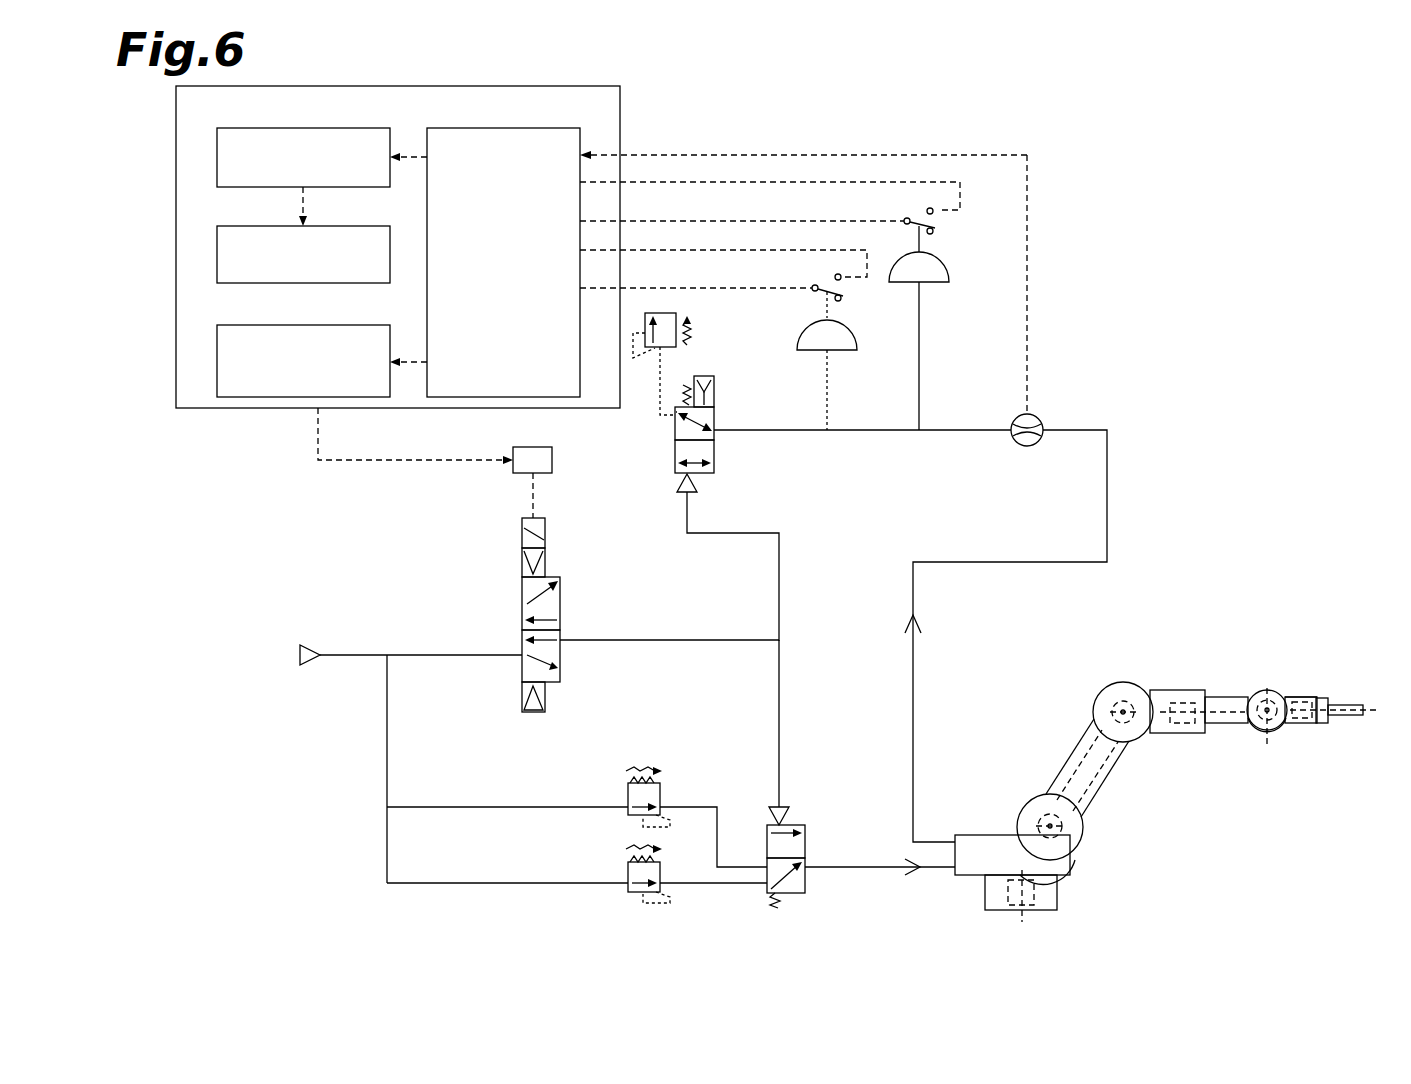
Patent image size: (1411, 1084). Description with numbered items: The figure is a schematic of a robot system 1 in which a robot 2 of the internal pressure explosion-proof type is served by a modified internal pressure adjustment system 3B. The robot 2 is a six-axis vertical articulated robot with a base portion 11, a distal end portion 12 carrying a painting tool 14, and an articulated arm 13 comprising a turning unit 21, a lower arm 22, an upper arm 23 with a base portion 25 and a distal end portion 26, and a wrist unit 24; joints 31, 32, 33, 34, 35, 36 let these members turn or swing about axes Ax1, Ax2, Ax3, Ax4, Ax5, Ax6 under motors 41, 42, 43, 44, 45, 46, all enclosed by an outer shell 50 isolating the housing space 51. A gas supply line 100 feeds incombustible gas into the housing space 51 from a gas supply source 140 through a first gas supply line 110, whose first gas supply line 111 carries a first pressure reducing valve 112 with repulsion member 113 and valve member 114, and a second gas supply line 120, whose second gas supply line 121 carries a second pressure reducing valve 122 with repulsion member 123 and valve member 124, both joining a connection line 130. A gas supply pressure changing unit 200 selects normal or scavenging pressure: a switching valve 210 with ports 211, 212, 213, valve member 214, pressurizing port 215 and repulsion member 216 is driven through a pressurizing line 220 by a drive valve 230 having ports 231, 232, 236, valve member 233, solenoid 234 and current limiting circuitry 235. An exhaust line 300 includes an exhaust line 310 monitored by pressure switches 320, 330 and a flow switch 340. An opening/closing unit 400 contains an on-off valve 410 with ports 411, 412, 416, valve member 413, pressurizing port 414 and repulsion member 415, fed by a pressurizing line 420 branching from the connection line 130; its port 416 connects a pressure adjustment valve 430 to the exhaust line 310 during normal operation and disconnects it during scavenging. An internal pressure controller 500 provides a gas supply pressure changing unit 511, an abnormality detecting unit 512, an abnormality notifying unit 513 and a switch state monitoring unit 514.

The robot system 1 is at (1253, 210).
The robot 2 is at (998, 658).
The internal pressure adjustment system 3B is at (1097, 290).
The base portion 11 is at (985, 893).
The distal end portion 12 is at (1322, 698).
The articulated arm 13 is at (1073, 735).
The painting tool 14 is at (1350, 715).
The turning unit 21 is at (958, 835).
The lower arm 22 is at (1068, 780).
The upper arm 23 is at (1157, 600).
The wrist unit 24 is at (1300, 723).
The base portion 25 is at (1185, 690).
The distal end portion 26 is at (1210, 697).
The joint 31 is at (1065, 875).
The joint 32 is at (1083, 835).
The joint 33 is at (1100, 688).
The joint 34 is at (1220, 723).
The joint 35 is at (1270, 725).
The joint 36 is at (1305, 723).
The motor 41 is at (1000, 905).
The motor 42 is at (1040, 812).
The motor 43 is at (1122, 700).
The motor 44 is at (1170, 700).
The motor 45 is at (1268, 695).
The motor 46 is at (1300, 702).
The outer shell 50 is at (1100, 790).
The housing space 51 is at (1110, 752).
The axis Ax1 is at (1030, 915).
The axis Ax2 is at (1036, 820).
The axis Ax3 is at (1130, 725).
The axis Ax4 is at (1230, 710).
The axis Ax5 is at (1267, 745).
The axis Ax6 is at (1345, 705).
The gas supply line 100 is at (372, 836).
The first gas supply line 110 is at (535, 848).
The first gas supply line 111 is at (548, 883).
The first pressure reducing valve 112 is at (620, 845).
The repulsion member 113 is at (660, 850).
The valve member 114 is at (626, 890).
The second gas supply line 120 is at (540, 773).
The second gas supply line 121 is at (548, 807).
The second pressure reducing valve 122 is at (620, 770).
The repulsion member 123 is at (645, 773).
The valve member 124 is at (662, 800).
The connection line 130 is at (856, 865).
The gas supply source 140 is at (318, 652).
The gas supply pressure changing unit 200 is at (448, 604).
The switching valve 210 is at (760, 790).
The port 211 is at (768, 888).
The port 212 is at (767, 840).
The port 213 is at (808, 870).
The valve member 214 is at (805, 895).
The pressurizing port 215 is at (783, 807).
The repulsion member 216 is at (773, 908).
The pressurizing line 220 is at (777, 692).
The drive valve 230 is at (577, 580).
The port 231 is at (522, 665).
The port 232 is at (562, 640).
The valve member 233 is at (562, 650).
The solenoid 234 is at (522, 535).
The current limiting circuitry 235 is at (555, 470).
The port 236 is at (522, 640).
The exhaust line 300 is at (1110, 406).
The exhaust line 310 is at (915, 715).
The pressure switch 320 is at (848, 352).
The pressure switch 330 is at (937, 284).
The flow switch 340 is at (1032, 414).
The opening/closing unit 400 is at (712, 552).
The on-off valve 410 is at (735, 398).
The port 411 is at (716, 435).
The port 412 is at (677, 442).
The valve member 413 is at (716, 462).
The pressurizing port 414 is at (700, 486).
The repulsion member 415 is at (712, 376).
The port 416 is at (677, 412).
The pressurizing line 420 is at (780, 572).
The pressure adjustment valve 430 is at (678, 318).
The internal pressure controller 500 is at (620, 97).
The gas supply pressure changing unit 511 is at (333, 325).
The abnormality detecting unit 512 is at (333, 128).
The abnormality notifying unit 513 is at (333, 226).
The switch state monitoring unit 514 is at (505, 128).